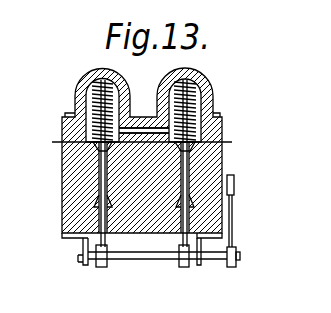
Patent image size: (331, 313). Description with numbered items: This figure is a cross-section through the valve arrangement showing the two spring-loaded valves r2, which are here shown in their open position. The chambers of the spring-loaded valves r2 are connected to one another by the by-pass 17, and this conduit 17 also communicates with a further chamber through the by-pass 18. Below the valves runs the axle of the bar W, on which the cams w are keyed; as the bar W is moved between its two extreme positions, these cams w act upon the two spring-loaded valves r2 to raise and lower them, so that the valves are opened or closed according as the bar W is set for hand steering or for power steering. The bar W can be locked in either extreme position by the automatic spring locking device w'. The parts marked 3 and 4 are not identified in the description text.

The by-pass 17 is at (138, 117).
The spring-loaded valves r2 is at (135, 136).
The by-pass 18 is at (97, 156).
The left valve stem 3 is at (100, 201).
The right valve stem 4 is at (188, 202).
The bar W is at (234, 186).
The cams w is at (110, 262).
The automatic spring locking device w' is at (152, 259).